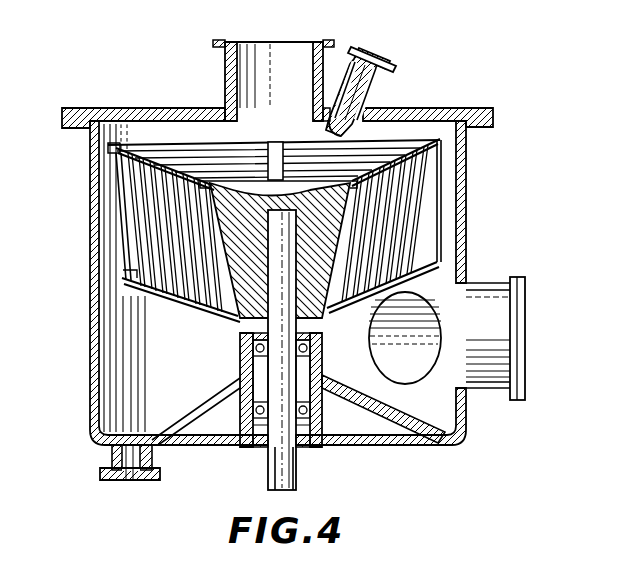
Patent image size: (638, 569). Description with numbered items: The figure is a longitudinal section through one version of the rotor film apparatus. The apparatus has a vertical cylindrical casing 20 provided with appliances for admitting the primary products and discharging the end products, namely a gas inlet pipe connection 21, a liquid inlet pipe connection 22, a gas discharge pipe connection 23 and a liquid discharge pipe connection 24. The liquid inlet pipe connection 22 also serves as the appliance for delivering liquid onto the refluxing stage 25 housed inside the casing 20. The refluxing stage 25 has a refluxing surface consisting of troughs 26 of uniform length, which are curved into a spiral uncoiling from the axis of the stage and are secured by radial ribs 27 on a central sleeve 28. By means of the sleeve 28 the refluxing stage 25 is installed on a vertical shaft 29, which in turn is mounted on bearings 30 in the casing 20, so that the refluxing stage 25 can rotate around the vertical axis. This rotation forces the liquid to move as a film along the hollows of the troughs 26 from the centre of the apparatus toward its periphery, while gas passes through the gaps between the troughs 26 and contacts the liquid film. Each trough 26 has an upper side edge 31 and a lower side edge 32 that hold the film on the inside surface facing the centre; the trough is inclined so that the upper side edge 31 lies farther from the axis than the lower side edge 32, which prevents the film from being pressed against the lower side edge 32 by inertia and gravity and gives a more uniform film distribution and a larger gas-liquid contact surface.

The vertical cylindrical casing 20 is at (465, 246).
The gas inlet pipe connection 21 is at (514, 278).
The liquid inlet pipe connection 22 is at (392, 72).
The gas discharge pipe connection 23 is at (214, 44).
The liquid discharge pipe connection 24 is at (106, 474).
The refluxing stage 25 is at (187, 310).
The troughs 26 is at (112, 203).
The radial ribs 27 is at (138, 137).
The central sleeve 28 is at (262, 318).
The vertical shaft 29 is at (270, 471).
The bearings 30 is at (236, 425).
The upper side edge 31 is at (98, 152).
The lower side edge 32 is at (132, 276).